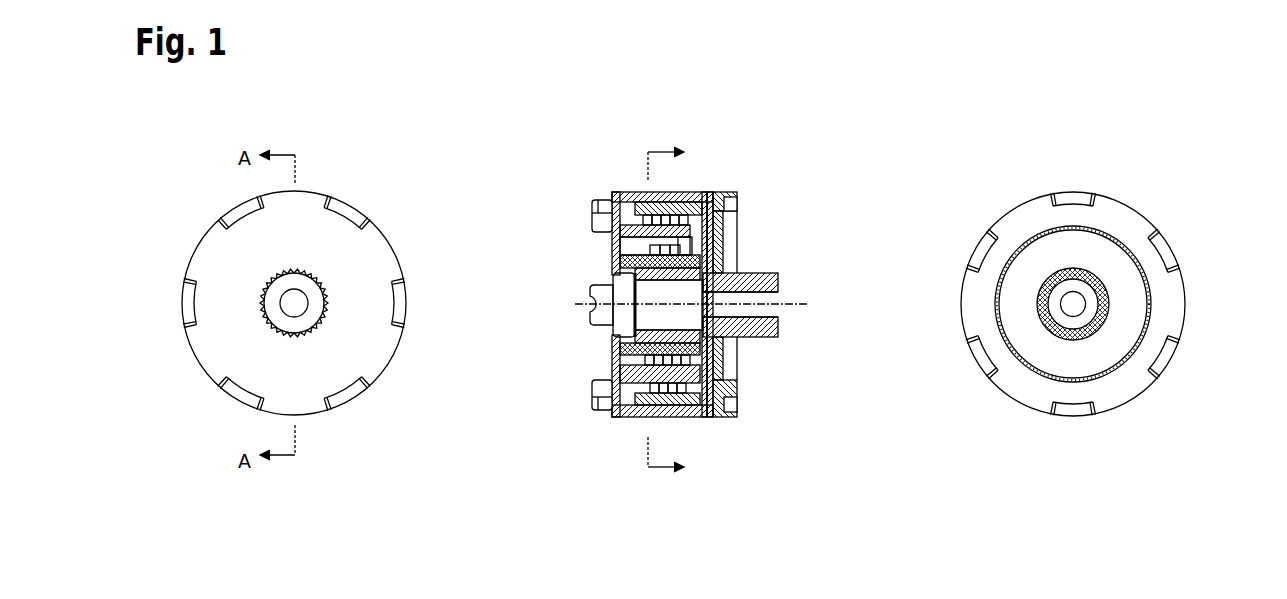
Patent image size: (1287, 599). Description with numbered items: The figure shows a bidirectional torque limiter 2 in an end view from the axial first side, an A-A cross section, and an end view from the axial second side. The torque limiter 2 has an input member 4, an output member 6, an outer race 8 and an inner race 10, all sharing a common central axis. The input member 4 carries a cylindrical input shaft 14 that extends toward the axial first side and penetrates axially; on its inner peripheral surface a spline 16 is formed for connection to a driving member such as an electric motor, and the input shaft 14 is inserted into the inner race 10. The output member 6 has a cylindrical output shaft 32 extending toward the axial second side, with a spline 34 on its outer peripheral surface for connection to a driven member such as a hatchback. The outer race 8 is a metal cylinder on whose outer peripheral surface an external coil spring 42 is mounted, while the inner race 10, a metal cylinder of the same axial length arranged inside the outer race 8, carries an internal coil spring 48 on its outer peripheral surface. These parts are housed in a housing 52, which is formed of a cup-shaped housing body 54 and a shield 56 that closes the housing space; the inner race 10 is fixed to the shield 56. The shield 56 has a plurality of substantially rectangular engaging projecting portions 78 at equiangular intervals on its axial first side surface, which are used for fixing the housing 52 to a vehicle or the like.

The bidirectional torque limiter 2 is at (669, 93).
The input member 4 is at (640, 289).
The output member 6 is at (758, 273).
The outer race 8 is at (616, 371).
The inner race 10 is at (612, 350).
The input shaft 14 is at (294, 331).
The spline 16 is at (289, 340).
The output shaft 32 is at (1152, 304).
The spline 34 is at (1110, 302).
The external coil spring 42 is at (672, 418).
The internal coil spring 48 is at (728, 392).
The housing 52 is at (707, 192).
The housing body 54 is at (716, 287).
The shield 56 is at (608, 254).
The engaging projecting portions 78 is at (236, 214).